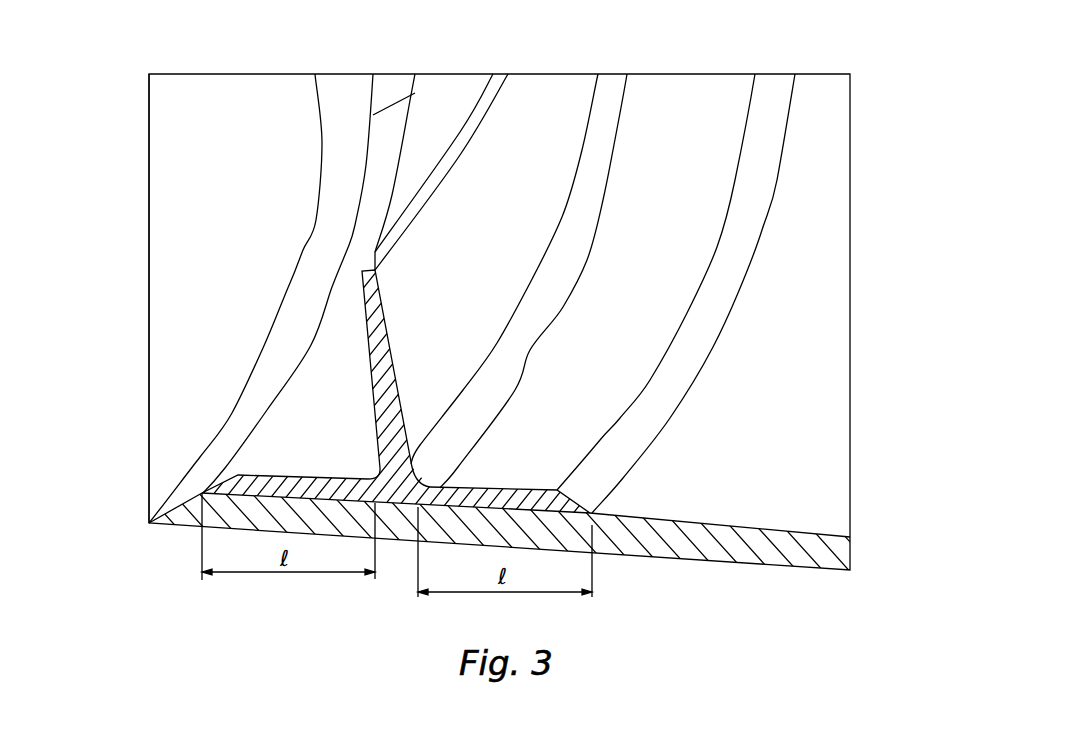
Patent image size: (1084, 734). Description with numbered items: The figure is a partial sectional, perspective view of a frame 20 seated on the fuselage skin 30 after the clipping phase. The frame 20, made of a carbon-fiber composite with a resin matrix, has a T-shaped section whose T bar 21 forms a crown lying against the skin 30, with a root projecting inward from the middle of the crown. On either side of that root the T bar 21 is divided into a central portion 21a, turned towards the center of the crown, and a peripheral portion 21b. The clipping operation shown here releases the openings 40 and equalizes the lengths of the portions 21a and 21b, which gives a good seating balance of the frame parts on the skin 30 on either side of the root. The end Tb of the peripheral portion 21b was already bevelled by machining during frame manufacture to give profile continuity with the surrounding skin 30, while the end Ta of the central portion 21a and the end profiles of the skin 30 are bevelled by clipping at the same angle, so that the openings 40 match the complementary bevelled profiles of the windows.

The frame 20 is at (671, 110).
The T bar 21 is at (397, 473).
The central portion 21a is at (342, 413).
The peripheral portion 21b is at (690, 155).
The end of the central portion Ta is at (255, 447).
The end of the peripheral portion Tb is at (737, 240).
The fuselage skin 30 is at (713, 392).
The openings 40 is at (228, 235).